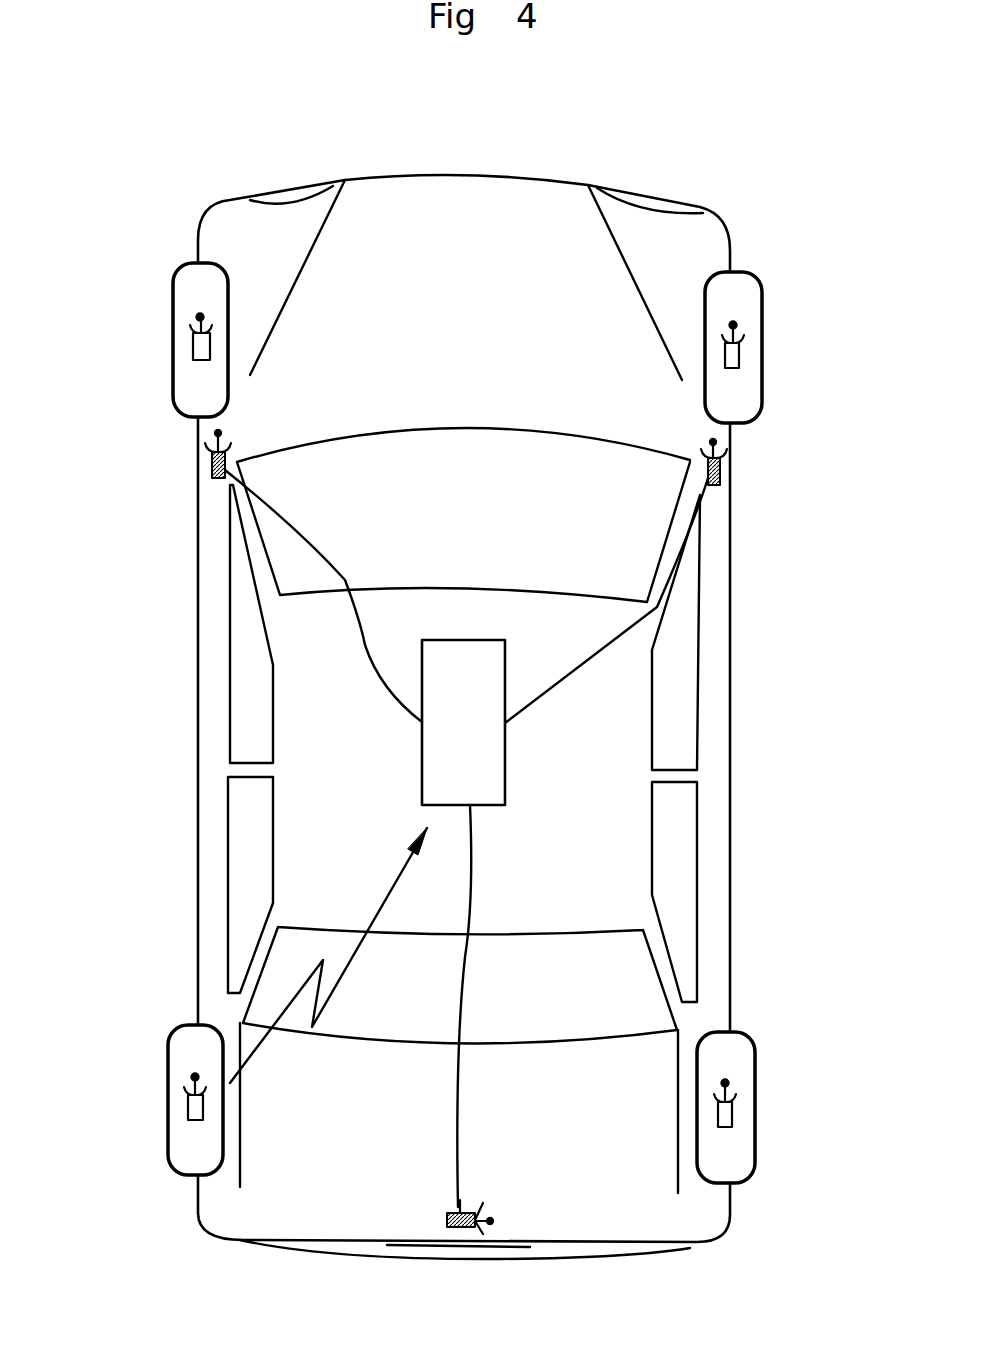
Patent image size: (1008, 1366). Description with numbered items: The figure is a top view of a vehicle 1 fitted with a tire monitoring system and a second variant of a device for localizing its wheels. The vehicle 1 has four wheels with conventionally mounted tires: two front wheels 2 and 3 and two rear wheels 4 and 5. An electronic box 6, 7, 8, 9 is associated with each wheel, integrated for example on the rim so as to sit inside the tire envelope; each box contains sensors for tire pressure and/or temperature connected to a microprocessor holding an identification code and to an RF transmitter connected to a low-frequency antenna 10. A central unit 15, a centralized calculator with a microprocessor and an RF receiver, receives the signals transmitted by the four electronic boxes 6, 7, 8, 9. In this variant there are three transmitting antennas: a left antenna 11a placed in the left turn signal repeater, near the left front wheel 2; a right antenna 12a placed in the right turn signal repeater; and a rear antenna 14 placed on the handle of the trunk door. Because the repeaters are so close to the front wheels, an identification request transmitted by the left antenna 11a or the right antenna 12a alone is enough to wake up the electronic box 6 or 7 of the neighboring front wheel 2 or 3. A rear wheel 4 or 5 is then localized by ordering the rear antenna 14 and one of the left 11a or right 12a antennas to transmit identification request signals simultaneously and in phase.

The vehicle 1 is at (668, 647).
The left front wheel 2 is at (205, 405).
The right front wheel 3 is at (738, 400).
The rear wheel 4 is at (183, 1145).
The rear wheel 5 is at (755, 1160).
The electronic box 6 is at (193, 348).
The electronic box 7 is at (738, 352).
The electronic box 8 is at (188, 1105).
The electronic box 9 is at (732, 1115).
The low-frequency antenna 10 is at (200, 317).
The left antenna 11a is at (212, 475).
The right antenna 12a is at (720, 470).
The rear antenna 14 is at (457, 1227).
The central unit 15 is at (490, 795).